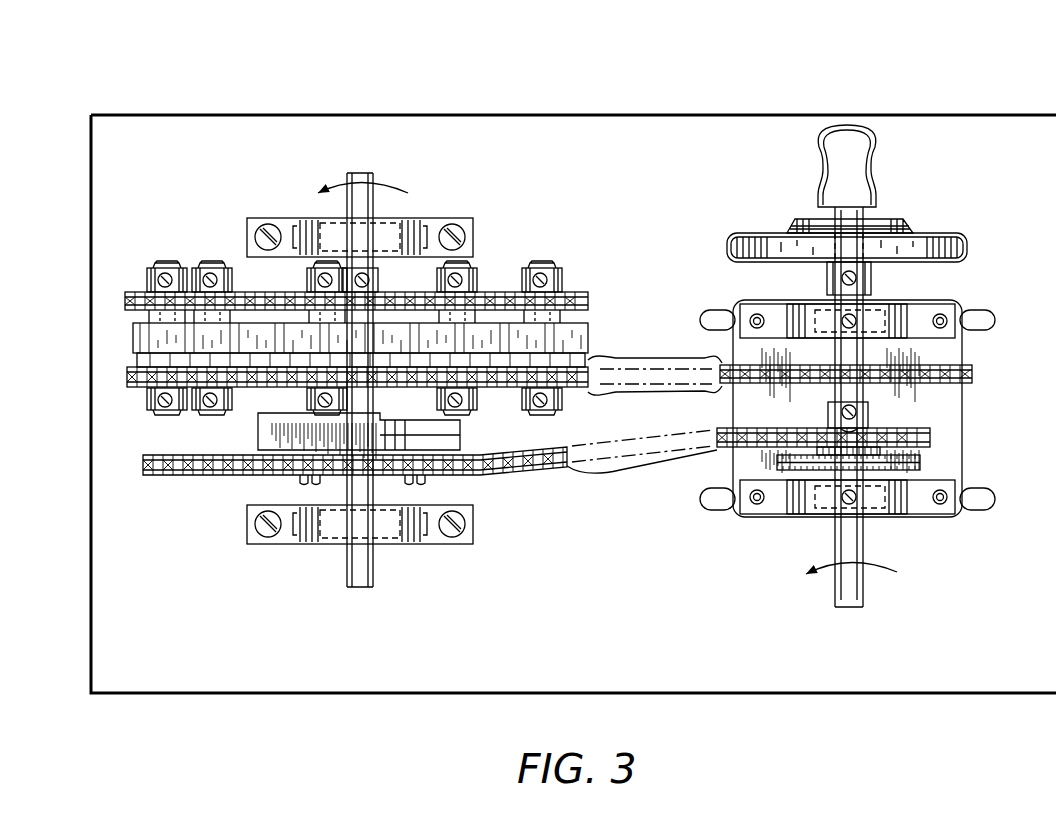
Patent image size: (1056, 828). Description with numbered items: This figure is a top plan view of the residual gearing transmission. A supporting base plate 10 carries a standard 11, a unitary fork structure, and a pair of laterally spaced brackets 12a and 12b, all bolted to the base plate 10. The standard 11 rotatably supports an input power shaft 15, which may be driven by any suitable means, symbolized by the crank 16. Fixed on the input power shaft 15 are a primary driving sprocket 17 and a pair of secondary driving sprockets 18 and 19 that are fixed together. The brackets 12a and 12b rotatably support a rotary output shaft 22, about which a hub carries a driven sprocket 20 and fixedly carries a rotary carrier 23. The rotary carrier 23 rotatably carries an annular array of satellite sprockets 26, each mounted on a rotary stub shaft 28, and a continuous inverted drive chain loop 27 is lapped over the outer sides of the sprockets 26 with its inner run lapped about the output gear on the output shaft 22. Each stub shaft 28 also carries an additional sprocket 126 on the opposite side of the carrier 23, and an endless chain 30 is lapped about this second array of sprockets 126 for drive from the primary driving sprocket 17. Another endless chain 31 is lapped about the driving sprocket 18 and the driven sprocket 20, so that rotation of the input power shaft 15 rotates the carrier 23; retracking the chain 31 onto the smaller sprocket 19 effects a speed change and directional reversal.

The supporting base plate 10 is at (262, 112).
The standard 11 is at (958, 516).
The bracket 12a is at (468, 546).
The bracket 12b is at (457, 216).
The input power shaft 15 is at (842, 609).
The crank 16 is at (942, 231).
The primary driving sprocket 17 is at (968, 376).
The secondary driving sprocket 18 is at (930, 437).
The secondary driving sprocket 19 is at (920, 463).
The driven sprocket 20 is at (170, 464).
The rotary output shaft 22 is at (356, 590).
The rotary carrier 23 is at (592, 336).
The sprockets 26 is at (150, 291).
The continuous inverted drive chain loop 27 is at (590, 293).
The rotary stub shaft 28 is at (205, 262).
The endless chain 30 is at (722, 360).
The endless chain 31 is at (717, 460).
The additional sprocket 126 is at (150, 390).